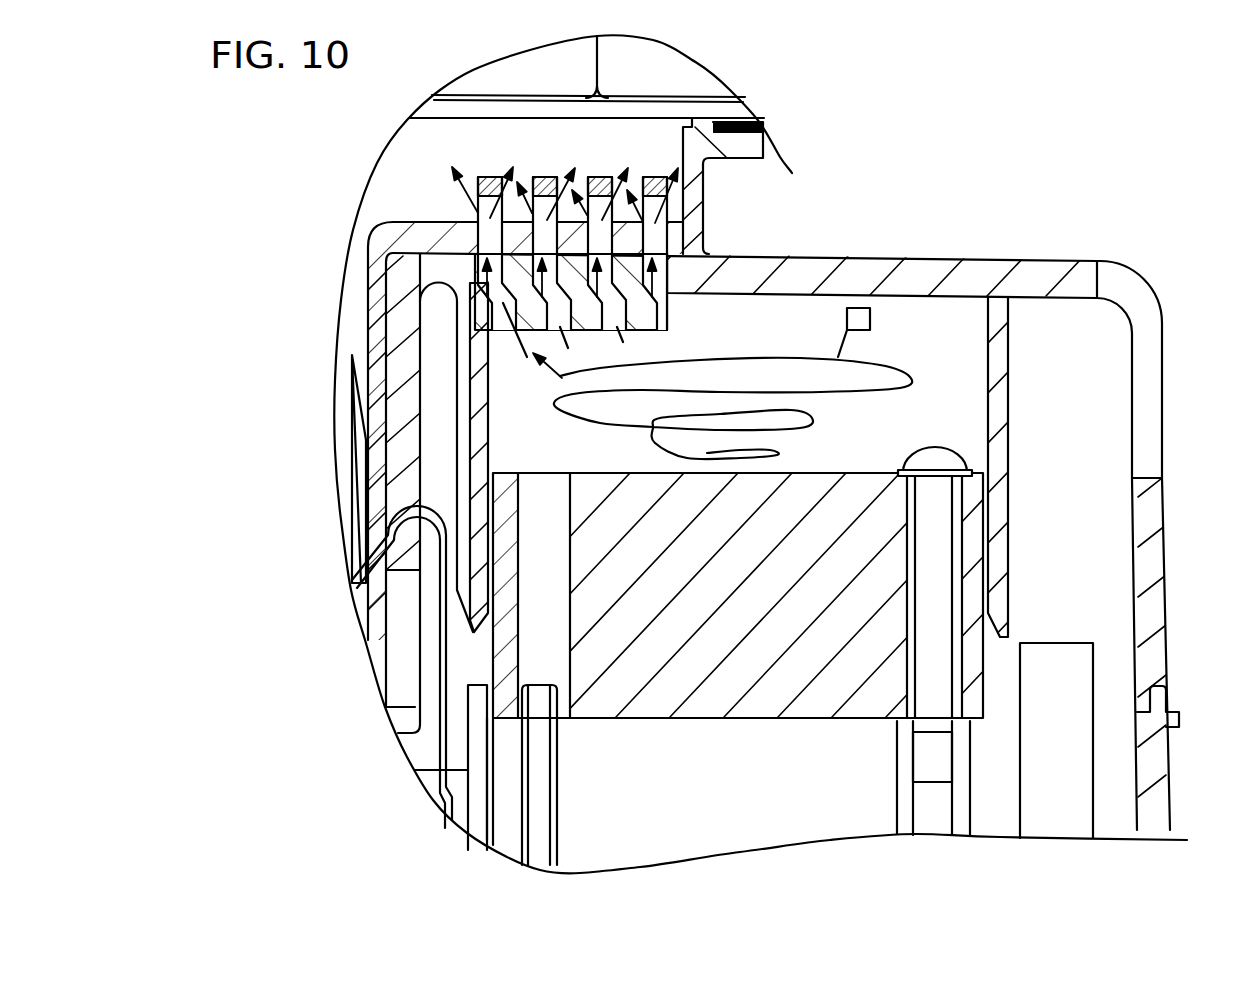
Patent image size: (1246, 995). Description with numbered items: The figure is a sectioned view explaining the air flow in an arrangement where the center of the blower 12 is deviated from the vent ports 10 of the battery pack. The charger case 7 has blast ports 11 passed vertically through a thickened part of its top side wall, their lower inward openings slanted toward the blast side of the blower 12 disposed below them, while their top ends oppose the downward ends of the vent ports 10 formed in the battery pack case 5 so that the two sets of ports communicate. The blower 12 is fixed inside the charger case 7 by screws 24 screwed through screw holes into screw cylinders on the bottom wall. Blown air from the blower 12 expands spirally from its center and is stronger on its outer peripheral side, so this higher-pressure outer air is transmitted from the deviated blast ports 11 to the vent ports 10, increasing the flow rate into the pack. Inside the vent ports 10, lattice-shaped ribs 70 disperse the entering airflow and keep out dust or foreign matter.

The battery pack case 5 is at (747, 145).
The charger case 7 is at (1160, 530).
The vent ports 10 is at (655, 237).
The blast ports 11 is at (545, 300).
The blower 12 is at (812, 675).
The screws 24 is at (945, 460).
The ribs 70 is at (485, 180).